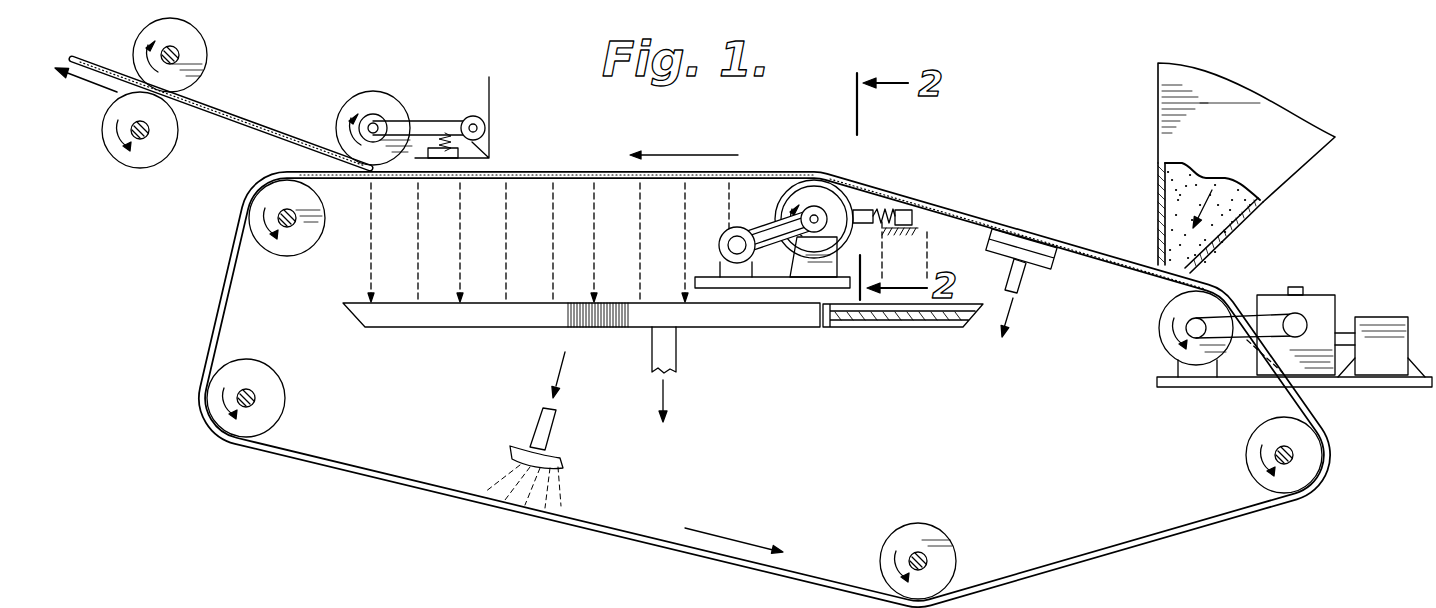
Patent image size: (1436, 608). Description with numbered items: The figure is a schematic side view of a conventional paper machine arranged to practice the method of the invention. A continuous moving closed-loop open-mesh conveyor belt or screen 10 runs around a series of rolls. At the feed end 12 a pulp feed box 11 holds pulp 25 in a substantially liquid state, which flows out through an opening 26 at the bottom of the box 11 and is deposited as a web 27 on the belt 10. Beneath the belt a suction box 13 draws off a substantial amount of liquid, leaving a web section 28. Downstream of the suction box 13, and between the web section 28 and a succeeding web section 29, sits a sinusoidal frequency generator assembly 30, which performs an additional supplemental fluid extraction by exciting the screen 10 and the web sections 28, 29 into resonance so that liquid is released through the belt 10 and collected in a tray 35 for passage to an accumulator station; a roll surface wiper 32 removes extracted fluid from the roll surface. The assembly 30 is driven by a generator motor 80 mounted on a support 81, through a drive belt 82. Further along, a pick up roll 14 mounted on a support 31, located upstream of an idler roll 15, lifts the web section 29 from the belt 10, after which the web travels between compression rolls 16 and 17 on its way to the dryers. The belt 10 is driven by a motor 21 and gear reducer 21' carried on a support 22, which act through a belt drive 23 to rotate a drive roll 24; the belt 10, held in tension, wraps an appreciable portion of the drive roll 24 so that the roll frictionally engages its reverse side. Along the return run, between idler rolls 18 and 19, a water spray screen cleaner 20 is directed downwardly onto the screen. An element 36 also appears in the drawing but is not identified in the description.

The conveyor belt or screen 10 is at (1215, 522).
The pulp feed box 11 is at (1280, 133).
The feed end 12 is at (1212, 287).
The suction box 13 is at (1050, 258).
The pick up roll 14 is at (383, 100).
The idler roll 15 is at (283, 245).
The compression roll 16 is at (147, 150).
The compression roll 17 is at (195, 48).
The idler roll 18 is at (275, 405).
The idler roll 19 is at (912, 528).
The water spray screen cleaner 20 is at (512, 452).
The motor 21 is at (1380, 375).
The gear reducer 21' is at (1331, 314).
The support 22 is at (1172, 385).
The belt drive 23 is at (1242, 343).
The drive roll 24 is at (1165, 338).
The pulp 25 is at (1180, 196).
The opening 26 is at (1160, 224).
The web 27 is at (1068, 237).
The web section 28 is at (952, 206).
The web section 29 is at (562, 168).
The sinusoidal frequency generator assembly 30 is at (780, 193).
The support 31 is at (487, 112).
The roll surface wiper 32 is at (903, 208).
The tray 35 is at (482, 317).
The outlet duct 36 is at (655, 352).
The generator motor 80 is at (730, 235).
The support 81 is at (710, 270).
The drive belt 82 is at (772, 278).